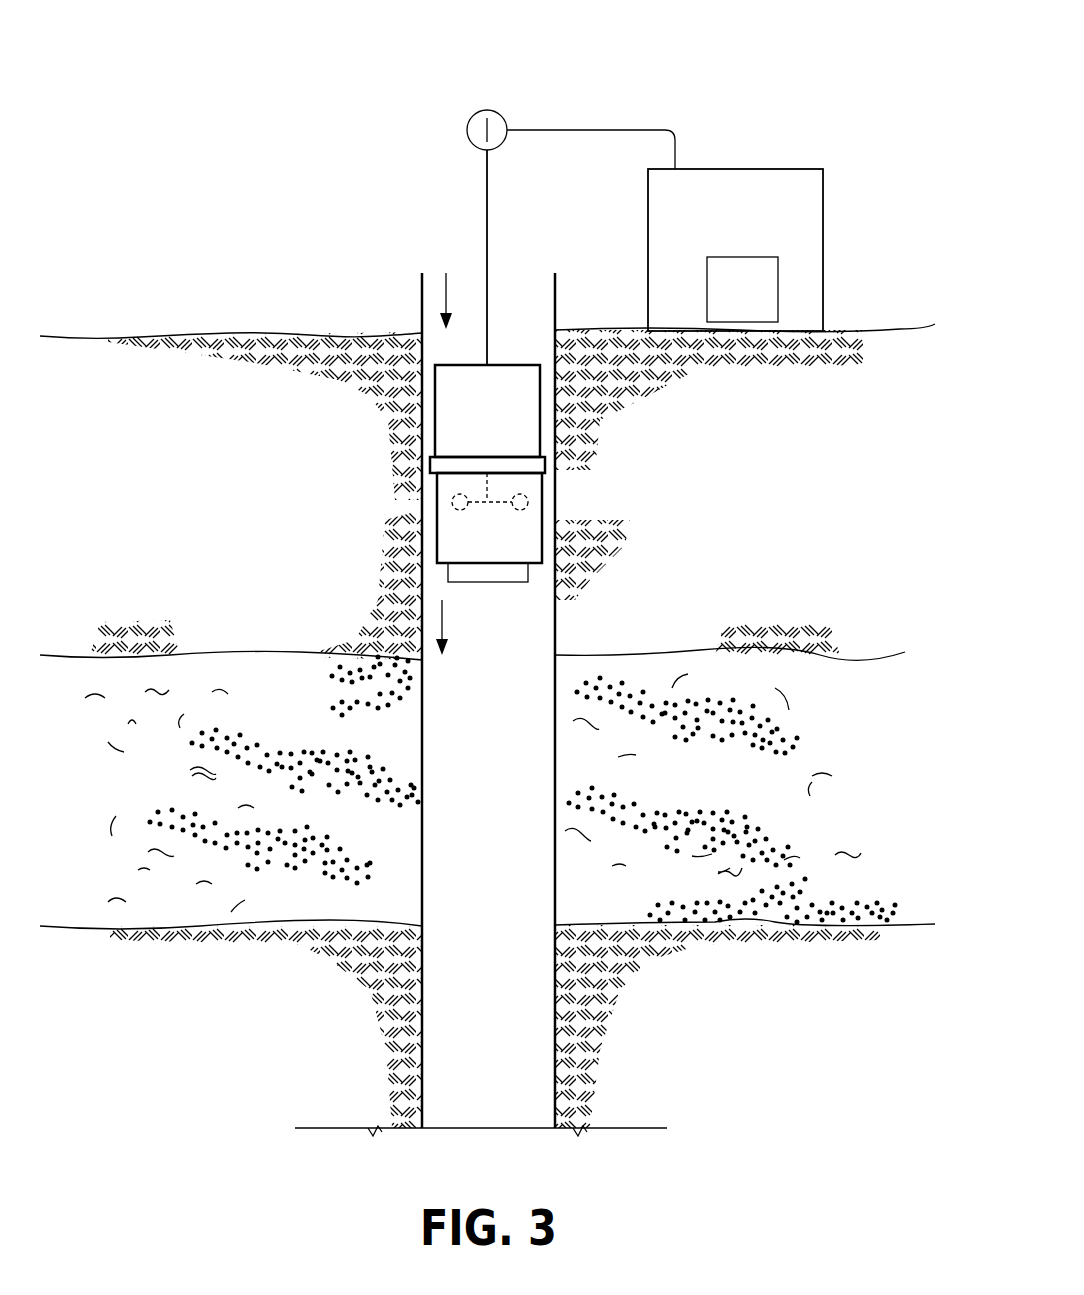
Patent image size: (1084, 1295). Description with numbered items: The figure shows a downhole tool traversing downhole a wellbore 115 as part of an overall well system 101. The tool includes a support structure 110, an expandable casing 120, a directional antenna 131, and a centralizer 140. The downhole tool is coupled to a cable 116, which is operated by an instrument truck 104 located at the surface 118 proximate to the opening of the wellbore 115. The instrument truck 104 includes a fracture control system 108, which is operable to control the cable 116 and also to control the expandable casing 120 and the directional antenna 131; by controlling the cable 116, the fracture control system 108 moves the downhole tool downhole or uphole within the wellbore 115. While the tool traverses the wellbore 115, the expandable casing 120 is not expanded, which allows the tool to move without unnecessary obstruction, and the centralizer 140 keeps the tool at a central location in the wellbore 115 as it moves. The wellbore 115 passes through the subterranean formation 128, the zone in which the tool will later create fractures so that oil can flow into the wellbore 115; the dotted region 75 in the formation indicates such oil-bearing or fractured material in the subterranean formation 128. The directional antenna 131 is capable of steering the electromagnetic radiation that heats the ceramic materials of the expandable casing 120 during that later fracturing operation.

The well system 101 is at (732, 73).
The instrument truck 104 is at (755, 224).
The fracture control system 108 is at (722, 302).
The support structure 110 is at (491, 473).
The wellbore 115 is at (552, 342).
The cable 116 is at (488, 233).
The surface 118 is at (617, 330).
The expandable casing 120 is at (537, 525).
The directional antenna 131 is at (532, 497).
The centralizer 140 is at (545, 459).
The proppant fractures 75 is at (98, 785).
The subterranean formation 128 is at (876, 740).